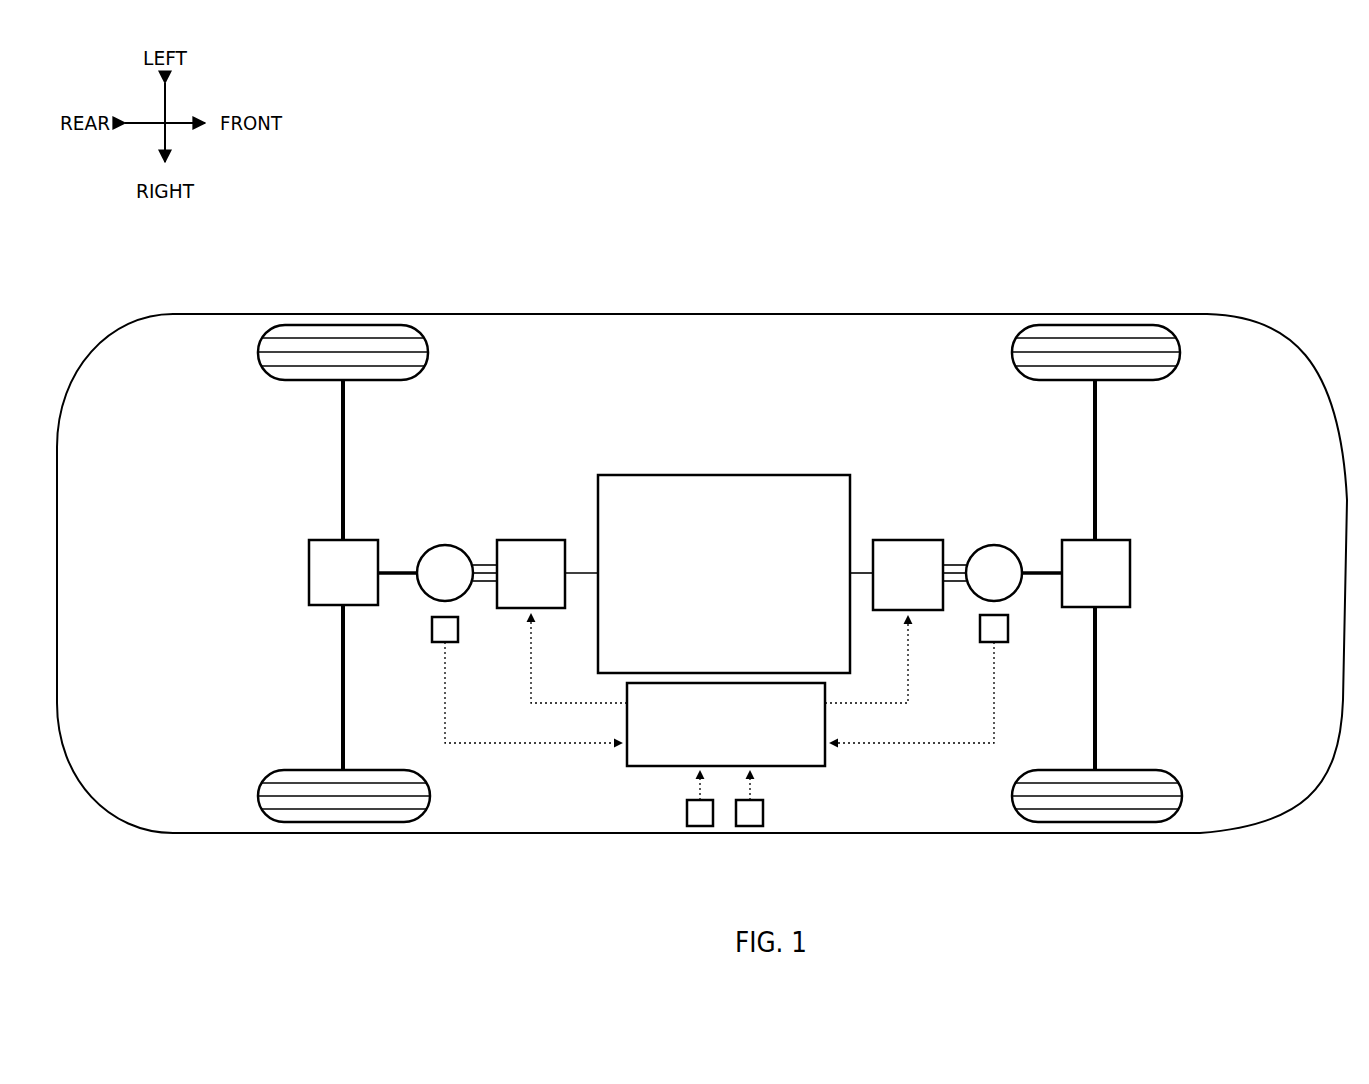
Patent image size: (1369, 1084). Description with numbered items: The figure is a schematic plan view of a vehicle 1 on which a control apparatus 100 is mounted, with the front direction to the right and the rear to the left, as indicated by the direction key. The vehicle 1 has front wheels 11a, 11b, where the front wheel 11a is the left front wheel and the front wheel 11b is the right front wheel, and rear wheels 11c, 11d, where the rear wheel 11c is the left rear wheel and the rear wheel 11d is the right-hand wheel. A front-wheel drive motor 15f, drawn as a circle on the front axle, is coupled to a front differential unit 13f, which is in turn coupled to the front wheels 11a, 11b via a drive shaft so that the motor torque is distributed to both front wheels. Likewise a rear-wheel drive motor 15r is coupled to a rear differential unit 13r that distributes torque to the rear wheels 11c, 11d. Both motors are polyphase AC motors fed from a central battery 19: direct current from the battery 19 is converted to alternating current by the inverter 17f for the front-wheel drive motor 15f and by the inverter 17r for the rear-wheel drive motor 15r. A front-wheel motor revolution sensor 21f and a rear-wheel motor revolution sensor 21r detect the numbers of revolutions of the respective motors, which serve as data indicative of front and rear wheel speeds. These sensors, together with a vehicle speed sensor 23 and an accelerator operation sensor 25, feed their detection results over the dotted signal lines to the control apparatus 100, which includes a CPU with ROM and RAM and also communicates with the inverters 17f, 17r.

The vehicle 1 is at (1132, 104).
The front wheel 11a is at (1117, 326).
The front wheel 11b is at (1120, 822).
The rear wheel 11c is at (312, 325).
The rear wheel 11d is at (312, 822).
The rear differential unit 13r is at (367, 546).
The front differential unit 13f is at (1078, 547).
The rear-wheel drive motor 15r is at (449, 551).
The front-wheel drive motor 15f is at (992, 552).
The inverter 17r is at (533, 549).
The inverter 17f is at (907, 549).
The battery 19 is at (695, 535).
The rear-wheel motor revolution sensor 21r is at (452, 642).
The front-wheel motor revolution sensor 21f is at (994, 642).
The vehicle speed sensor 23 is at (698, 826).
The accelerator operation sensor 25 is at (745, 826).
The control apparatus 100 is at (792, 743).